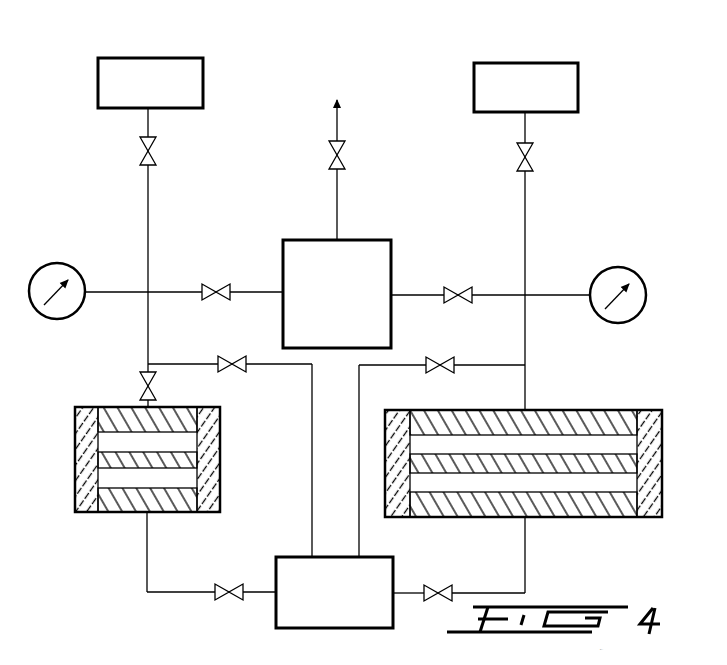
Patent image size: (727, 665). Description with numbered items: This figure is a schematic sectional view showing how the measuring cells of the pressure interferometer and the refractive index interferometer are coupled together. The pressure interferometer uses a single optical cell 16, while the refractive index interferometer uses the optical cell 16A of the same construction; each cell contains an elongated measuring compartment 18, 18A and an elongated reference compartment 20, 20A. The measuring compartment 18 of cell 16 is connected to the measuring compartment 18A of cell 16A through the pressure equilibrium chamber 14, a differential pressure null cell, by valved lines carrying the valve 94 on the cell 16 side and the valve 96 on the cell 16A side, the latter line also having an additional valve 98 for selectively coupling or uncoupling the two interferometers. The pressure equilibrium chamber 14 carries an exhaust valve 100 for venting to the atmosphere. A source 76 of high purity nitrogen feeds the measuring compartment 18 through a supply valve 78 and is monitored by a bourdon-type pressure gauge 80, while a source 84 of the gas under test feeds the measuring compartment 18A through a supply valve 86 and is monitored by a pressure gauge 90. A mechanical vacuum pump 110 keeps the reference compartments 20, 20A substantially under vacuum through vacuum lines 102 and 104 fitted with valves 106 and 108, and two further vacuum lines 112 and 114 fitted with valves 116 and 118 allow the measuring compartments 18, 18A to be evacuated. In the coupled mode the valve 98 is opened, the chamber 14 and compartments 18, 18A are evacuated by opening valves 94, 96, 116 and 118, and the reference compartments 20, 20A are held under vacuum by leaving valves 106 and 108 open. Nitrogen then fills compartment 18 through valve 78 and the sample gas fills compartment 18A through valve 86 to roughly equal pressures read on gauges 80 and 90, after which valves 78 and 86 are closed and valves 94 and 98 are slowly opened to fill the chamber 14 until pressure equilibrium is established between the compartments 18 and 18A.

The pressure equilibrium chamber 14 is at (383, 247).
The optical cell 16 is at (523, 462).
The optical cell 16A is at (148, 458).
The measuring compartment 18 is at (476, 443).
The measuring compartment 18A is at (181, 445).
The reference compartment 20 is at (612, 485).
The reference compartment 20A is at (122, 483).
The source of high purity nitrogen 76 is at (482, 82).
The supply valve 78 is at (520, 161).
The pressure gauge 80 is at (600, 283).
The source of the gas under test 84 is at (203, 83).
The supply valve 86 is at (154, 148).
The pressure gauge 90 is at (55, 265).
The valve 94 is at (461, 288).
The valve 96 is at (142, 378).
The valve 98 is at (218, 284).
The exhaust valve 100 is at (344, 152).
The vacuum line 102 is at (416, 592).
The vacuum line 104 is at (254, 590).
The valve 106 is at (445, 590).
The valve 108 is at (224, 596).
The mechanical vacuum pump 110 is at (280, 618).
The vacuum line 112 is at (359, 540).
The vacuum line 114 is at (311, 500).
The valve 116 is at (451, 359).
The valve 118 is at (233, 357).